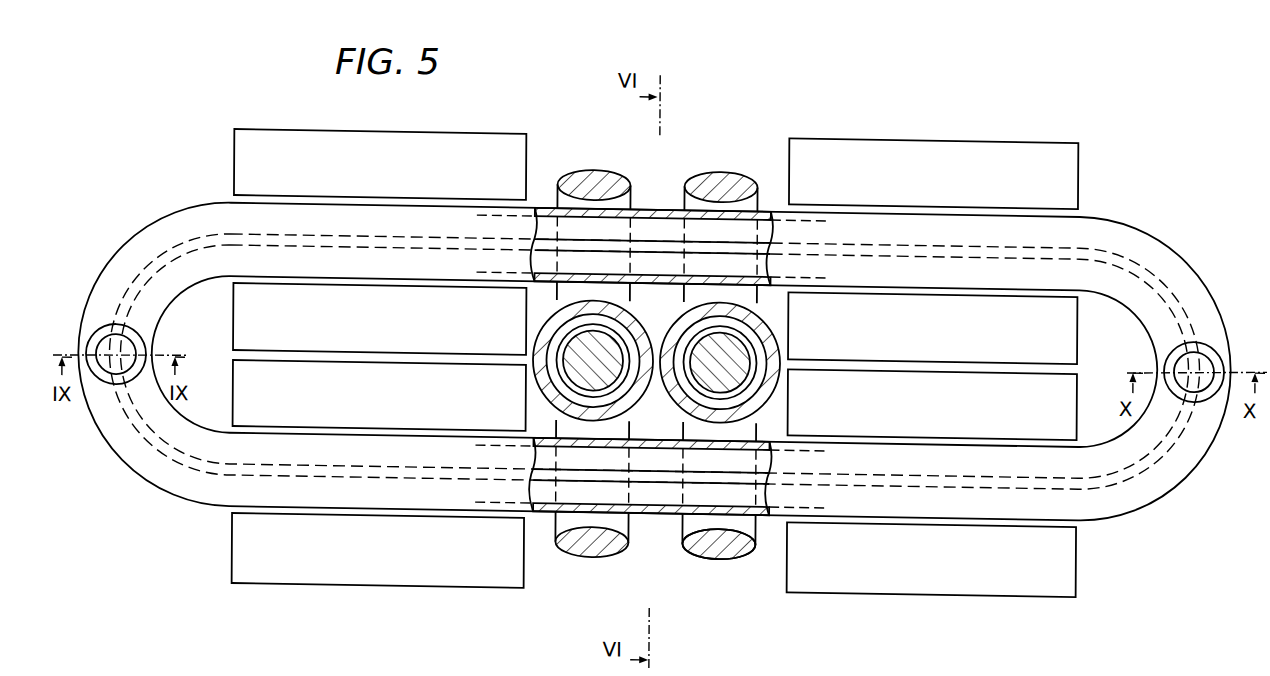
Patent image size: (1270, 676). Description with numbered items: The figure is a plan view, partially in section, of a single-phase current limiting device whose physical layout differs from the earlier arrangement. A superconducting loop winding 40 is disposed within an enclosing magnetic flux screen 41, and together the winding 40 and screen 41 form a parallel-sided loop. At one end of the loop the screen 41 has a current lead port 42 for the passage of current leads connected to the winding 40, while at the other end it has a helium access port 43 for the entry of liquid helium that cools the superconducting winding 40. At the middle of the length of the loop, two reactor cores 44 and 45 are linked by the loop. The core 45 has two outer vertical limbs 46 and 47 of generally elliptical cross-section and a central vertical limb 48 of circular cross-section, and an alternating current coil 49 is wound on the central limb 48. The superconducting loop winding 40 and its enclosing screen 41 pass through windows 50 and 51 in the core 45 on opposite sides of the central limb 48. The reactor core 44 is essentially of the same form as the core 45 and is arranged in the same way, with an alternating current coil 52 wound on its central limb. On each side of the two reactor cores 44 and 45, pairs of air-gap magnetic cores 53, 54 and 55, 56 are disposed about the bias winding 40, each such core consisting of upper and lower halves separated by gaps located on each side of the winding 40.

The superconducting loop winding 40 is at (535, 489).
The magnetic flux screen 41 is at (658, 518).
The current lead port 42 is at (137, 344).
The helium access port 43 is at (1168, 346).
The reactor core 44 is at (575, 571).
The reactor core 45 is at (730, 572).
The outer vertical limb 46 is at (714, 175).
The outer vertical limb 47 is at (748, 543).
The central vertical limb 48 is at (733, 346).
The alternating current coil 49 is at (770, 400).
The window 50 is at (689, 212).
The window 51 is at (699, 527).
The alternating current coil 52 is at (548, 335).
The air-gap magnetic core 53 is at (234, 156).
The air-gap magnetic core 54 is at (371, 580).
The air-gap magnetic core 55 is at (937, 146).
The air-gap magnetic core 56 is at (954, 570).